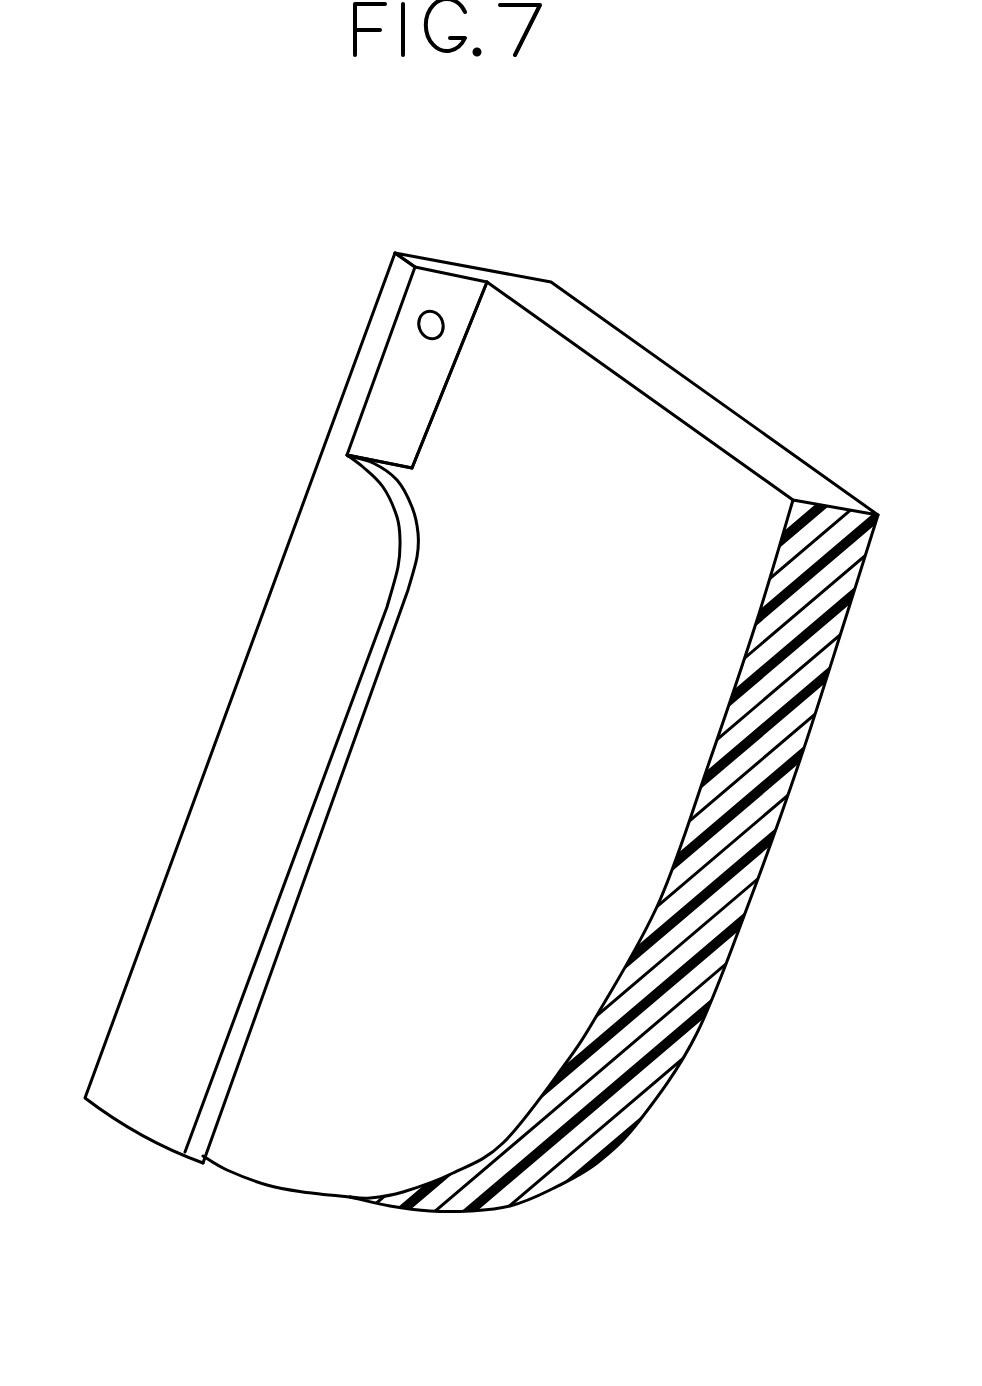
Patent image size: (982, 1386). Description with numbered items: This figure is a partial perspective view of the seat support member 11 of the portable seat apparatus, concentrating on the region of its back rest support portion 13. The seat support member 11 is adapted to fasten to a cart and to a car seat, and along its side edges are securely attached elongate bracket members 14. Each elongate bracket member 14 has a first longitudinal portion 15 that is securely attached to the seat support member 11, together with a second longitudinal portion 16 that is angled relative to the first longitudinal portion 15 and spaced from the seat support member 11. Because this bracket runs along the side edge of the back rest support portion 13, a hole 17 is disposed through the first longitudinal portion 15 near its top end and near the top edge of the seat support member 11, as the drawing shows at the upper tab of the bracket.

The seat support member 11 is at (483, 458).
The back rest support portion 13 is at (263, 1152).
The elongate bracket member 14 is at (190, 880).
The first longitudinal portion 15 is at (383, 382).
The second longitudinal portion 16 is at (307, 623).
The hole 17 is at (441, 328).